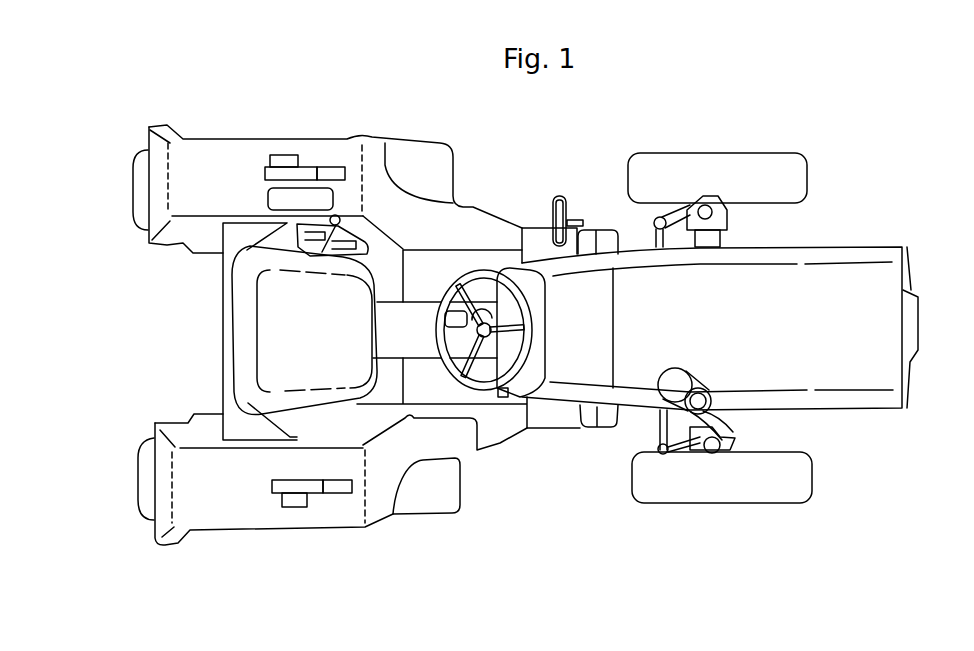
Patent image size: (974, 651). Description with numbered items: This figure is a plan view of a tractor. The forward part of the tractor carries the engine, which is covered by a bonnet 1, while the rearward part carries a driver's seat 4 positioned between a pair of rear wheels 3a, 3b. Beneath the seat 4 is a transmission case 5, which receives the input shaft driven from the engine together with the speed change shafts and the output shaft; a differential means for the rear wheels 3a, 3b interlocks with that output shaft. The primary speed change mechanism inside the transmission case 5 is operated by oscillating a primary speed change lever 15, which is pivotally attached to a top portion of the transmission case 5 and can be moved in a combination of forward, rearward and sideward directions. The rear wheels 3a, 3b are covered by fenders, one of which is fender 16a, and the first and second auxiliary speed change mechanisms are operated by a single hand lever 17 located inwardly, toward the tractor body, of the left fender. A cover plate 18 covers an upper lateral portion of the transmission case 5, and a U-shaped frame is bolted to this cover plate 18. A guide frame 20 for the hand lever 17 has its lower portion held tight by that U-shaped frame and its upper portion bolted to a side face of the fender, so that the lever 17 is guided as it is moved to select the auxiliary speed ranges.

The bonnet 1 is at (868, 252).
The rear wheel 3a is at (132, 186).
The rear wheel 3b is at (137, 487).
The driver's seat 4 is at (262, 337).
The transmission case 5 is at (427, 350).
The primary speed change lever 15 is at (437, 300).
The fender 16a is at (230, 138).
The hand lever 17 is at (335, 215).
The cover plate 18 is at (388, 240).
The guide frame 20 is at (387, 263).